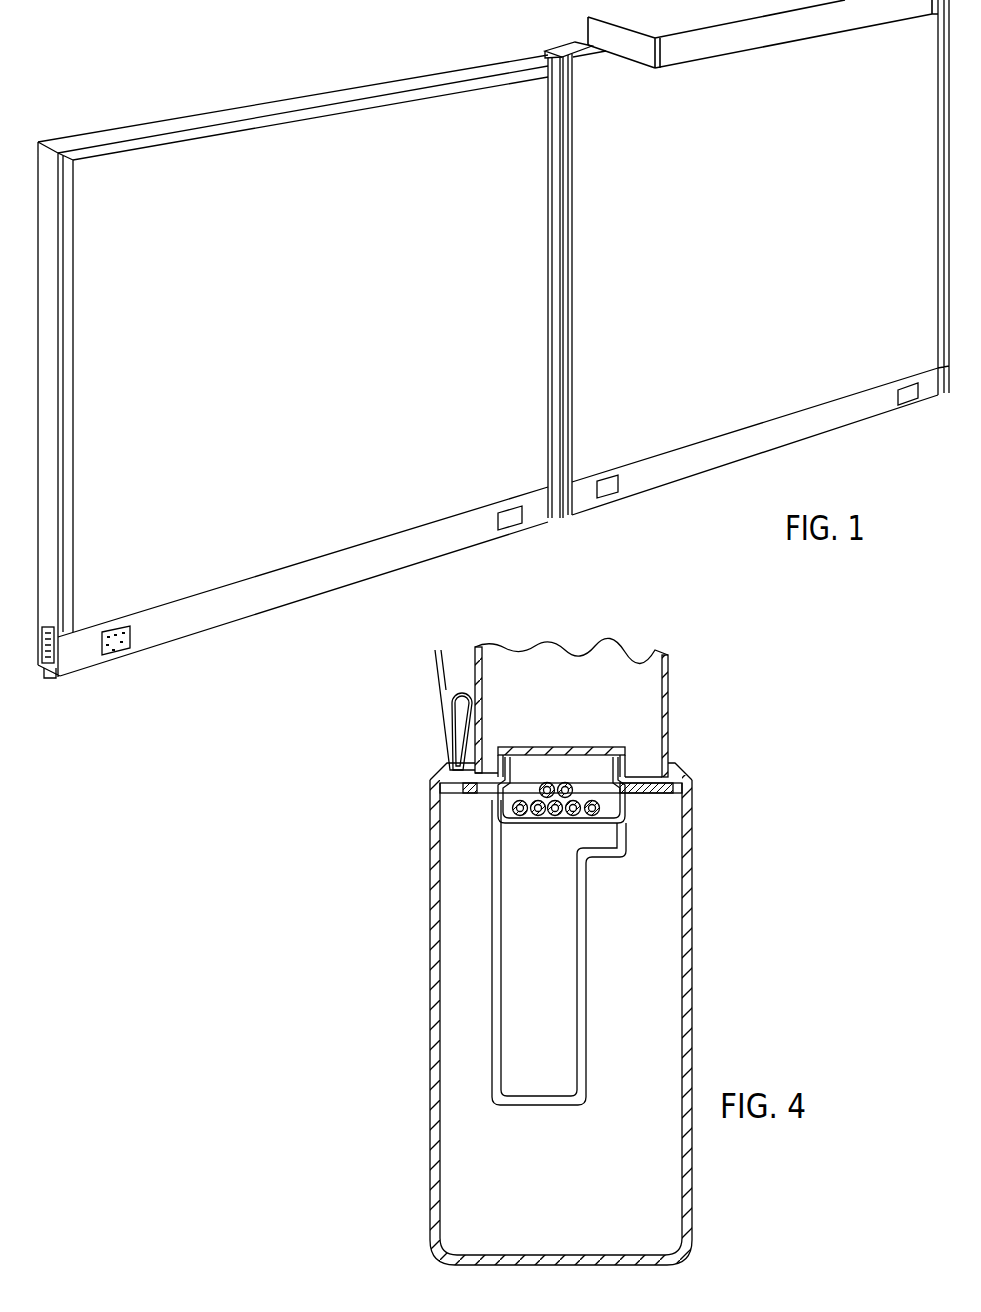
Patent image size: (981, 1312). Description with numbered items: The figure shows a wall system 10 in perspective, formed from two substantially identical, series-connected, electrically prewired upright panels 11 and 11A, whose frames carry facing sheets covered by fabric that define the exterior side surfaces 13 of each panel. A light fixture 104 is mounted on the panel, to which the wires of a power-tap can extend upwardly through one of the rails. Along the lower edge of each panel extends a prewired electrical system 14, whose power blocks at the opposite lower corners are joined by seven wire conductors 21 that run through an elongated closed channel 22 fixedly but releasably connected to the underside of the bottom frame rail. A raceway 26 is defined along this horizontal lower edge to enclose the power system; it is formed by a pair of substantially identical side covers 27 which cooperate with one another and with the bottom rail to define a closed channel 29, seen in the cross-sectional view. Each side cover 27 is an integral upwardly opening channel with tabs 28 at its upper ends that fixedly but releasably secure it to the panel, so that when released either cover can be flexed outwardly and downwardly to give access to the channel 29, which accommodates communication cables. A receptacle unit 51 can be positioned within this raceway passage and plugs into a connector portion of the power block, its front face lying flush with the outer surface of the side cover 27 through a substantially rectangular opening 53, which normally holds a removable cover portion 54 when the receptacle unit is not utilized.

In FIG. 1, the wall system 10 is at (339, 56).
In FIG. 1, the panel 11A is at (211, 108).
In FIG. 1, the panel 11 is at (566, 42).
In FIG. 1, the light fixture 104 is at (760, 36).
In FIG. 1, the exterior side surfaces 13 is at (761, 197).
In FIG. 1, the prewired electrical system 14 is at (710, 462).
In FIG. 1, the side covers 27 is at (805, 432).
In FIG. 1, the raceway 26 is at (876, 404).
In FIG. 1, the removable cover portion 54 is at (510, 518).
In FIG. 1, the rectangular opening 53 is at (122, 649).
In FIG. 1, the receptacle unit 51 is at (110, 651).
In FIG. 4, the tabs 28 is at (660, 775).
In FIG. 4, the wire conductors 21 is at (541, 830).
In FIG. 4, the closed channel 22 is at (600, 830).
In FIG. 4, the closed channel 29 is at (640, 1160).